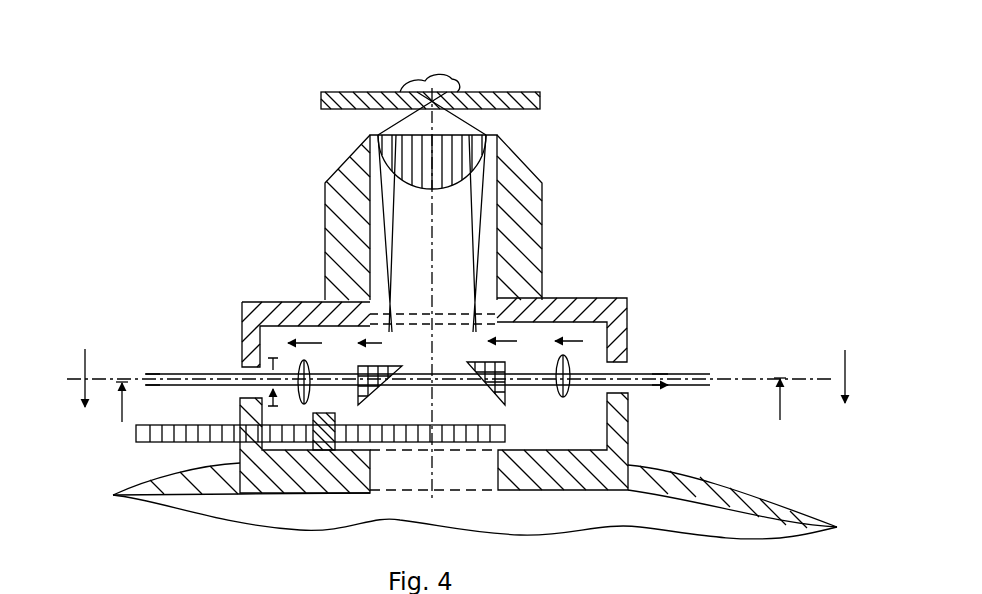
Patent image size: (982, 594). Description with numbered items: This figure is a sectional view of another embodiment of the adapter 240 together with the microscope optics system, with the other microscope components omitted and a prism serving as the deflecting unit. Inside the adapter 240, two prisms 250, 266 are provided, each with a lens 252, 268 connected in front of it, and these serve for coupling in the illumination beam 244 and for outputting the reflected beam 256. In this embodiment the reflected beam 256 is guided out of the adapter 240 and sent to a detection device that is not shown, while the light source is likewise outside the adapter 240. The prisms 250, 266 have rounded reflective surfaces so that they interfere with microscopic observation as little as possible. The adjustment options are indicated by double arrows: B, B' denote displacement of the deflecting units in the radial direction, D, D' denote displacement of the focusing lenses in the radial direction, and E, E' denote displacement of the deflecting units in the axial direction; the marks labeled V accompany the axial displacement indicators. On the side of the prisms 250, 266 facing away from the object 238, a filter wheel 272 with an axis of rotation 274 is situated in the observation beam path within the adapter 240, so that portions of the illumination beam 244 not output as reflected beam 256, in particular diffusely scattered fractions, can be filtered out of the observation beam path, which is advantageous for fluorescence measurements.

The object 238 is at (450, 80).
The illumination beam 244 is at (385, 187).
The reflected beam 256 is at (478, 186).
The adapter 240 is at (627, 300).
The prism 250 is at (374, 392).
The prism 266 is at (505, 405).
The lens 252 is at (298, 402).
The lens 268 is at (628, 406).
The filter wheel 272 is at (172, 436).
The axis of rotation 274 is at (318, 452).
The displacement of the deflecting unit in the radial direction B is at (336, 283).
The displacement of the deflecting unit in the radial direction B' is at (535, 286).
The displacement of the focusing lenses in the radial direction D is at (299, 301).
The displacement of the focusing lenses in the radial direction D' is at (594, 292).
The displacement of the deflecting unit in the axial direction E is at (97, 356).
The displacement of the deflecting unit in the axial direction E' is at (829, 359).
The direction V is at (111, 414).